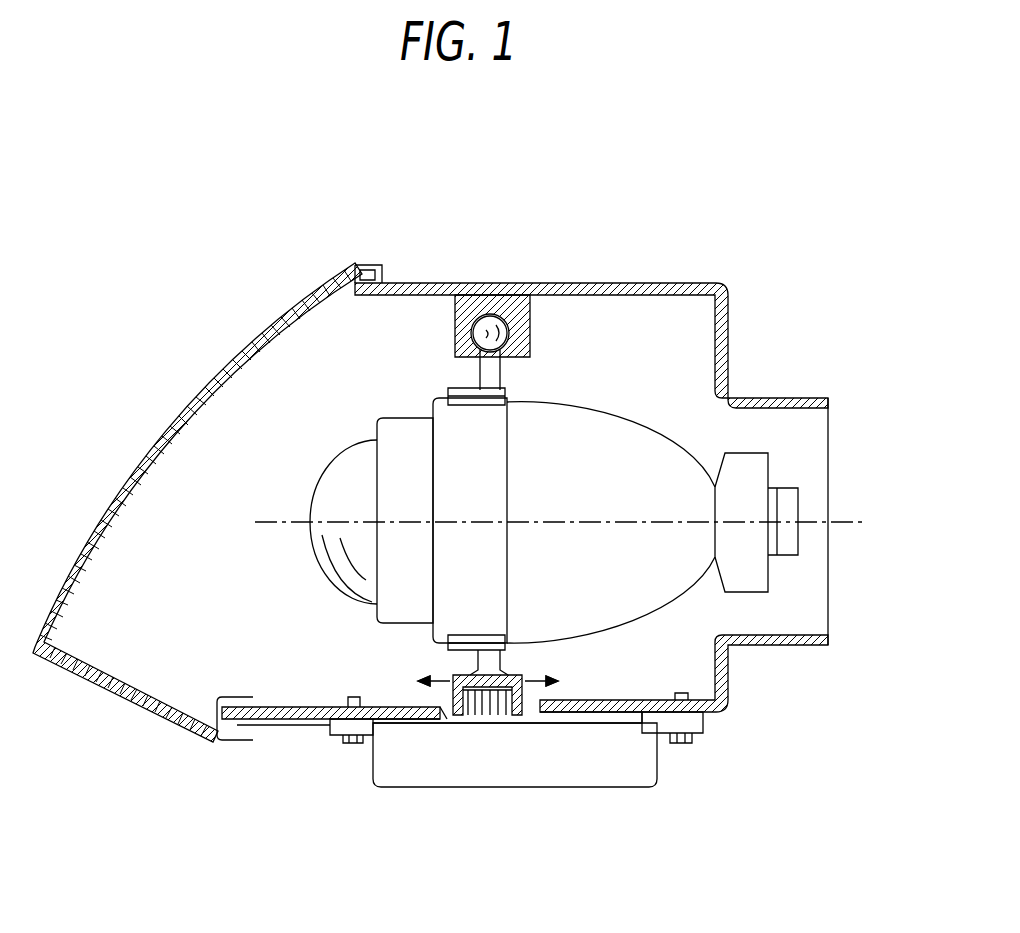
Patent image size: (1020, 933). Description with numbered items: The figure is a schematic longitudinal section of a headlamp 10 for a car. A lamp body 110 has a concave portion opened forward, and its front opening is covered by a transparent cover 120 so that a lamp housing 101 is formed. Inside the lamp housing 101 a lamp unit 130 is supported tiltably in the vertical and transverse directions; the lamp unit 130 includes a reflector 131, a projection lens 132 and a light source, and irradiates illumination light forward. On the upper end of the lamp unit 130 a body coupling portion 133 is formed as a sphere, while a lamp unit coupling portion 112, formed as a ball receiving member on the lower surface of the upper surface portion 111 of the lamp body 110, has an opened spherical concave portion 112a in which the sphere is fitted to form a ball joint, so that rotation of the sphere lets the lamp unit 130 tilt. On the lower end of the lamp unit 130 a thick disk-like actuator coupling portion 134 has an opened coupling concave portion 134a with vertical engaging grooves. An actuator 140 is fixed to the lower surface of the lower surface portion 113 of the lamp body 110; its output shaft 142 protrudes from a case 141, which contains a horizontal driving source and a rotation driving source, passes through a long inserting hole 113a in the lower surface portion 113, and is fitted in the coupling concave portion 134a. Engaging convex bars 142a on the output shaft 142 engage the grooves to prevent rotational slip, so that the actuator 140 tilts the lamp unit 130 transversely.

The headlamp 10 is at (260, 247).
The lamp housing 101 is at (228, 625).
The lamp body 110 is at (582, 283).
The upper surface portion 111 is at (422, 283).
The lamp unit coupling portion 112 is at (530, 296).
The spherical concave portion 112a is at (509, 333).
The lower surface portion 113 is at (298, 720).
The inserting hole 113a is at (450, 726).
The transparent cover 120 is at (213, 367).
The lamp unit 130 is at (404, 424).
The reflector 131 is at (598, 412).
The projection lens 132 is at (345, 475).
The body coupling portion 133 is at (472, 333).
The actuator coupling portion 134 is at (527, 700).
The coupling concave portion 134a is at (477, 716).
The actuator 140 is at (632, 767).
The case 141 is at (592, 772).
The output shaft 142 is at (500, 720).
The engaging convex bars 142a is at (487, 717).